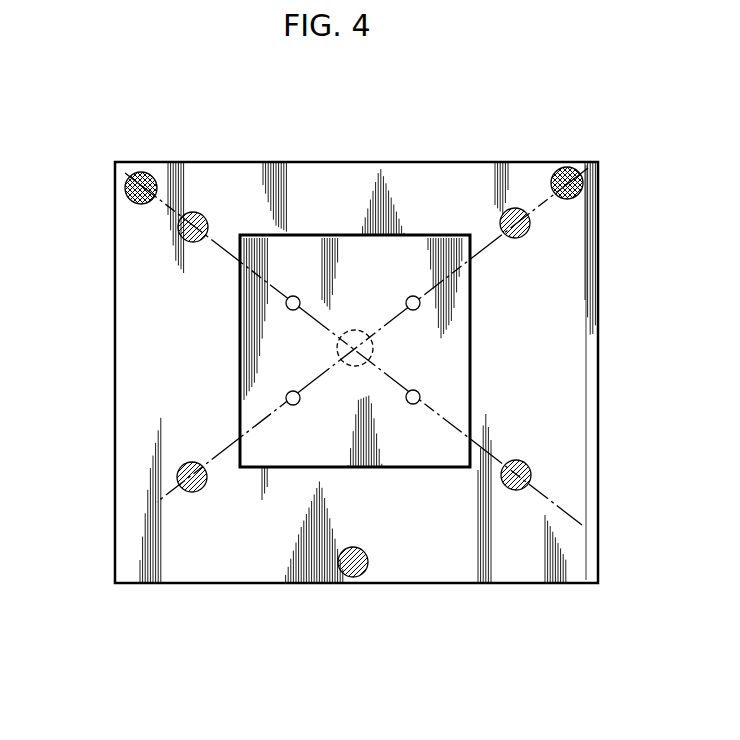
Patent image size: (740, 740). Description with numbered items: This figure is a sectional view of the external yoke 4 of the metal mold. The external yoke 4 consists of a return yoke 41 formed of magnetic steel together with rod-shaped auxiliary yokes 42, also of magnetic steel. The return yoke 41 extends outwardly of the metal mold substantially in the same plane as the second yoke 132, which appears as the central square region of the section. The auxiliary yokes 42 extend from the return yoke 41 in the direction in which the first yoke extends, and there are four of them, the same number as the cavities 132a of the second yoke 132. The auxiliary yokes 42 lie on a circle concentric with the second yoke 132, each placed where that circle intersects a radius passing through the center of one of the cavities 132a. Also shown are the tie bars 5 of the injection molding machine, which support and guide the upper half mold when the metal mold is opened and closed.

The external yoke 4 is at (116, 305).
The return yoke 41 is at (590, 374).
The auxiliary yokes 42 is at (194, 212).
The tie bars 5 is at (145, 172).
The second yoke 132 is at (355, 250).
The cavities 132a is at (294, 296).